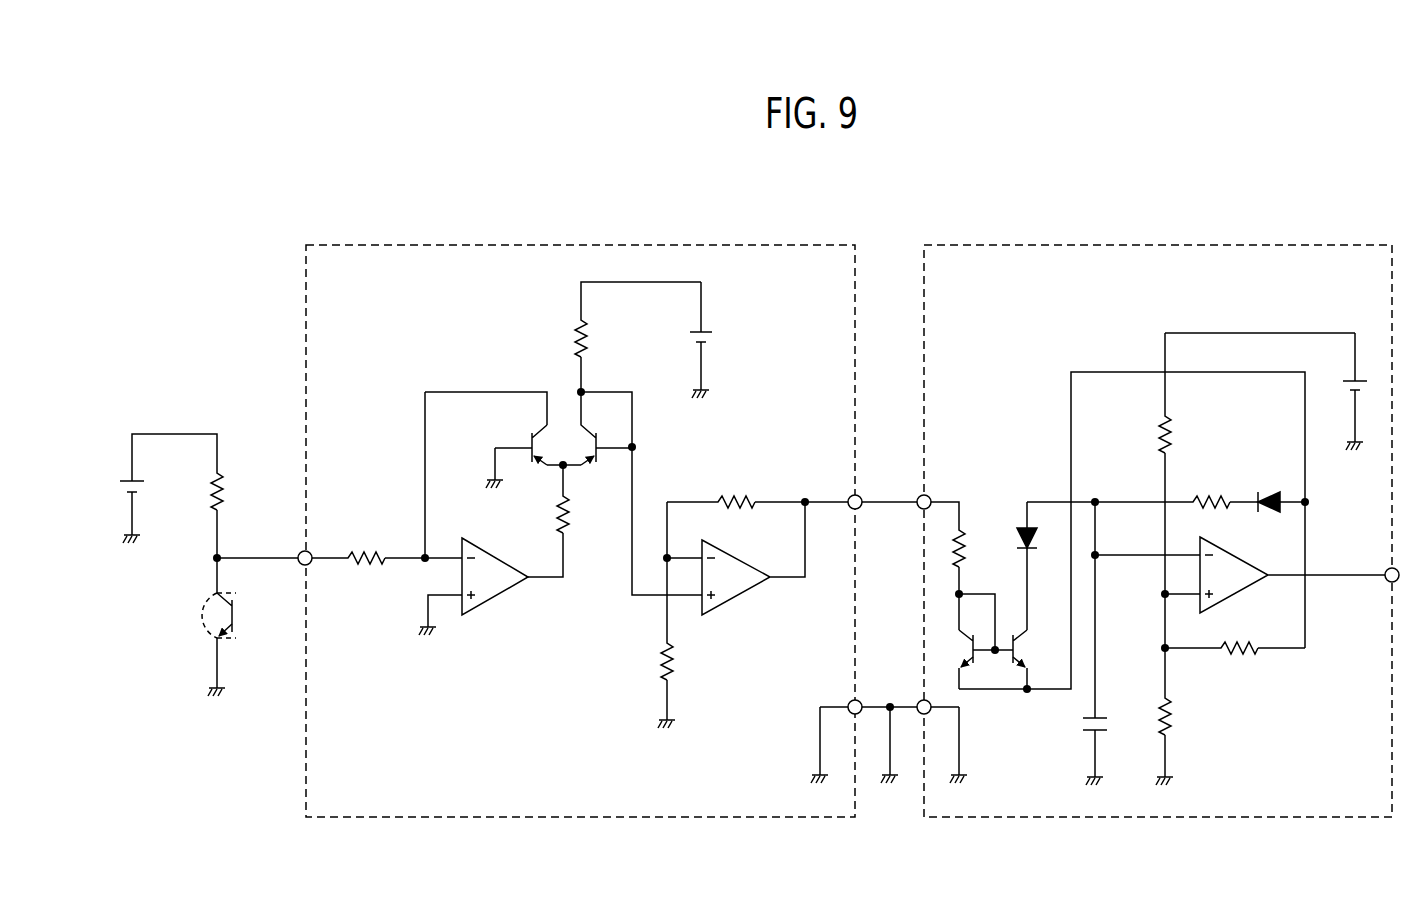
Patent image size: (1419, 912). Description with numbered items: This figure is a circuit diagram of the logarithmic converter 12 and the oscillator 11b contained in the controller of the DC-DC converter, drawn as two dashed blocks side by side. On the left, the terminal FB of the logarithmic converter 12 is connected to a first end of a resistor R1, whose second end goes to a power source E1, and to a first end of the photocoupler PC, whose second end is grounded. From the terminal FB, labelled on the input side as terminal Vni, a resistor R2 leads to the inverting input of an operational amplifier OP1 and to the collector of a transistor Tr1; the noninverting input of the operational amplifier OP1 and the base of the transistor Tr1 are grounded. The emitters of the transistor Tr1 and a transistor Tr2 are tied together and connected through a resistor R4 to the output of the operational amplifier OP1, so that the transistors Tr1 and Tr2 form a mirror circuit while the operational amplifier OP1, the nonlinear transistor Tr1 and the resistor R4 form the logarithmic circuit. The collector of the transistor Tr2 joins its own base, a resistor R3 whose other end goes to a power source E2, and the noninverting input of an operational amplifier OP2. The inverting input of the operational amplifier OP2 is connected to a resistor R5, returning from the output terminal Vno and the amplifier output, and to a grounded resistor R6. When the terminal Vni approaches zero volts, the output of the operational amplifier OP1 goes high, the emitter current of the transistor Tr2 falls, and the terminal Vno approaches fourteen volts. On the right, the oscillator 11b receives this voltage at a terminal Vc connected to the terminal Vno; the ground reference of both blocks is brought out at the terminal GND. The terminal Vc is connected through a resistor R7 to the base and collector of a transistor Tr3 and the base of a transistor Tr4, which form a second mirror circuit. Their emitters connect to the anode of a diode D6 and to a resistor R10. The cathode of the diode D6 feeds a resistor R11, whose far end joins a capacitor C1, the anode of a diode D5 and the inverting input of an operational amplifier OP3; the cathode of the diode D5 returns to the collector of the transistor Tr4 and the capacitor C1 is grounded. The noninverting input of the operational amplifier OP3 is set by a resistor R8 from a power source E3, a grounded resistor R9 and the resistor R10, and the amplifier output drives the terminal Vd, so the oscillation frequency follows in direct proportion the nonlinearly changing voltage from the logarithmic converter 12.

The logarithmic converter 12 is at (623, 245).
The oscillator 11b is at (1127, 245).
The power source E1 is at (148, 488).
The resistor R1 is at (233, 514).
The terminal FB is at (281, 535).
The terminal Vni is at (391, 532).
The resistor R2 is at (365, 574).
The photocoupler PC is at (238, 627).
The transistor Tr1 is at (524, 445).
The transistor Tr2 is at (597, 428).
The resistor R3 is at (638, 337).
The power source E2 is at (718, 340).
The resistor R4 is at (567, 521).
The operational amplifier OP1 is at (503, 595).
The operational amplifier OP2 is at (745, 595).
The resistor R5 is at (757, 551).
The resistor R6 is at (686, 684).
The output voltage terminal Vno is at (861, 487).
The terminal Vc is at (939, 496).
The ground terminal GND is at (870, 737).
The resistor R7 is at (976, 578).
The transistor Tr3 is at (951, 659).
The transistor Tr4 is at (1036, 618).
The diode D5 is at (1056, 540).
The capacitor C1 is at (1109, 643).
The resistor R8 is at (1257, 463).
The power source E3 is at (1344, 391).
The resistor R11 is at (1176, 485).
The diode D6 is at (1280, 486).
The operational amplifier OP3 is at (1245, 594).
The terminal Vd is at (1377, 552).
The resistor R10 is at (1235, 644).
The resistor R9 is at (1181, 740).